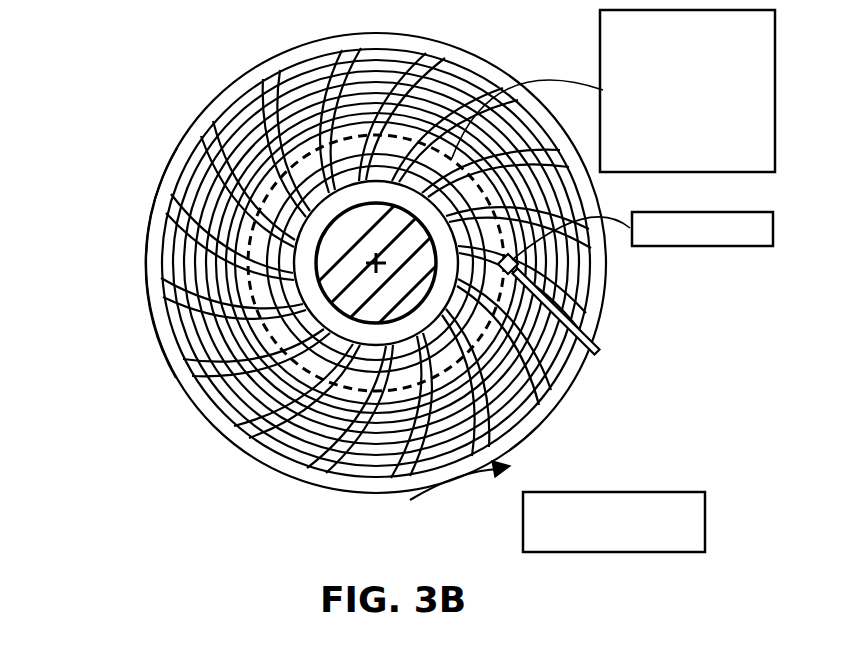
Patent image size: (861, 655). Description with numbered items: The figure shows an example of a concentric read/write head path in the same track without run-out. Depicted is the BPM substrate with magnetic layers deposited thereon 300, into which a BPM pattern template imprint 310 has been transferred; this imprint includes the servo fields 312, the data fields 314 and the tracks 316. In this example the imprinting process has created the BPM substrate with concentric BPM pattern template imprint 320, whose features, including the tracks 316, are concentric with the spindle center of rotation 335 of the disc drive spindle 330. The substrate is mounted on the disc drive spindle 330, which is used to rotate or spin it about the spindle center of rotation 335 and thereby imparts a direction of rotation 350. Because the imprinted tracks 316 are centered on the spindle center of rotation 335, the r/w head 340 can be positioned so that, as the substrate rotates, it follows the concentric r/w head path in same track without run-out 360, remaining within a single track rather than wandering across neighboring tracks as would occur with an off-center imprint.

The BPM substrate with magnetic layers deposited thereon 300 is at (237, 450).
The BPM pattern template imprint 310 is at (277, 457).
The servo fields 312 is at (480, 423).
The data fields 314 is at (297, 97).
The tracks 316 is at (202, 111).
The BPM substrate with concentric BPM pattern template imprint 320 is at (160, 202).
The disc drive spindle 330 is at (335, 280).
The spindle center of rotation 335 is at (372, 262).
The r/w head 340 is at (766, 212).
The direction of rotation 350 is at (690, 492).
The concentric r/w head path in same track without run-out 360 is at (600, 48).